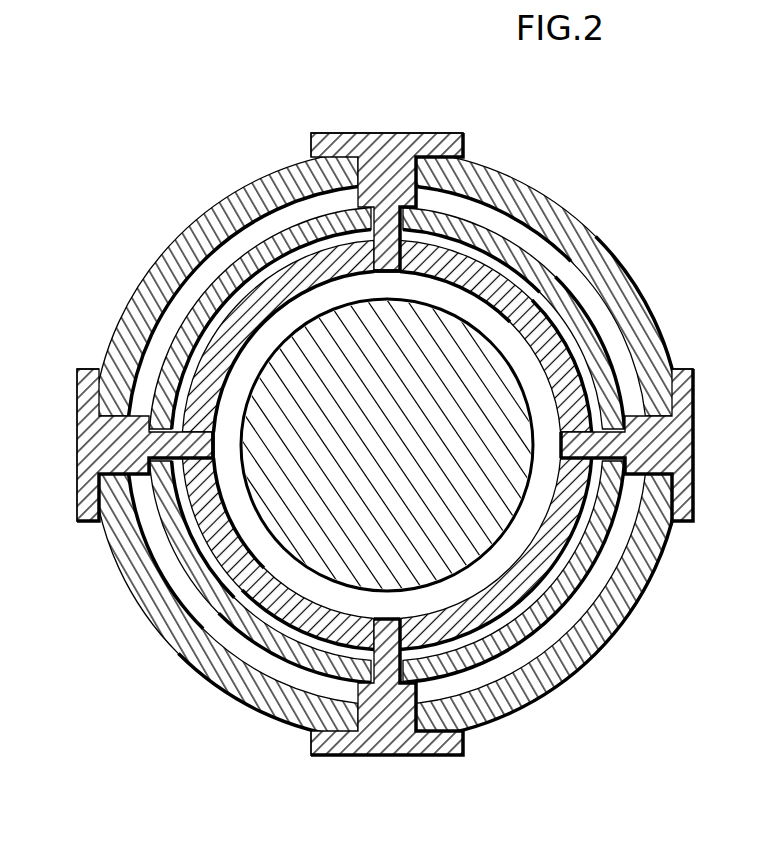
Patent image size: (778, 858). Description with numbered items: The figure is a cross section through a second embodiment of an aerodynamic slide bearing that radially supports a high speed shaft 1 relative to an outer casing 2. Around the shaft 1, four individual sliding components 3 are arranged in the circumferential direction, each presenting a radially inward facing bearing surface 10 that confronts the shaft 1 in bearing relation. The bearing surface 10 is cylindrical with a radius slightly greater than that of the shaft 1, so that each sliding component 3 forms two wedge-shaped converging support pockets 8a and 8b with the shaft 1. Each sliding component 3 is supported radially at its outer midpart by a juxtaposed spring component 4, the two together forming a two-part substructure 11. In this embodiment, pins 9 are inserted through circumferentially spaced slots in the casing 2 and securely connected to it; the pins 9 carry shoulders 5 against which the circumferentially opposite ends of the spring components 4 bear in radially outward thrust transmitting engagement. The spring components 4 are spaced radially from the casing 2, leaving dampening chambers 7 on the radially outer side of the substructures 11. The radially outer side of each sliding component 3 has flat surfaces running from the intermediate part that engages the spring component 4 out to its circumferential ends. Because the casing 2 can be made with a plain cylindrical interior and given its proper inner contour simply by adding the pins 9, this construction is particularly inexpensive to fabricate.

The high speed shaft 1 is at (394, 446).
The outer casing 2 is at (500, 706).
The sliding component 3 is at (278, 273).
The spring component 4 is at (310, 225).
The shoulder 5 is at (410, 268).
The dampening chamber 7 is at (148, 290).
The support wedge 8a is at (400, 272).
The support wedge 8b is at (378, 272).
The pin 9 is at (380, 157).
The bearing surface 10 is at (262, 333).
The substructure 11 is at (543, 283).